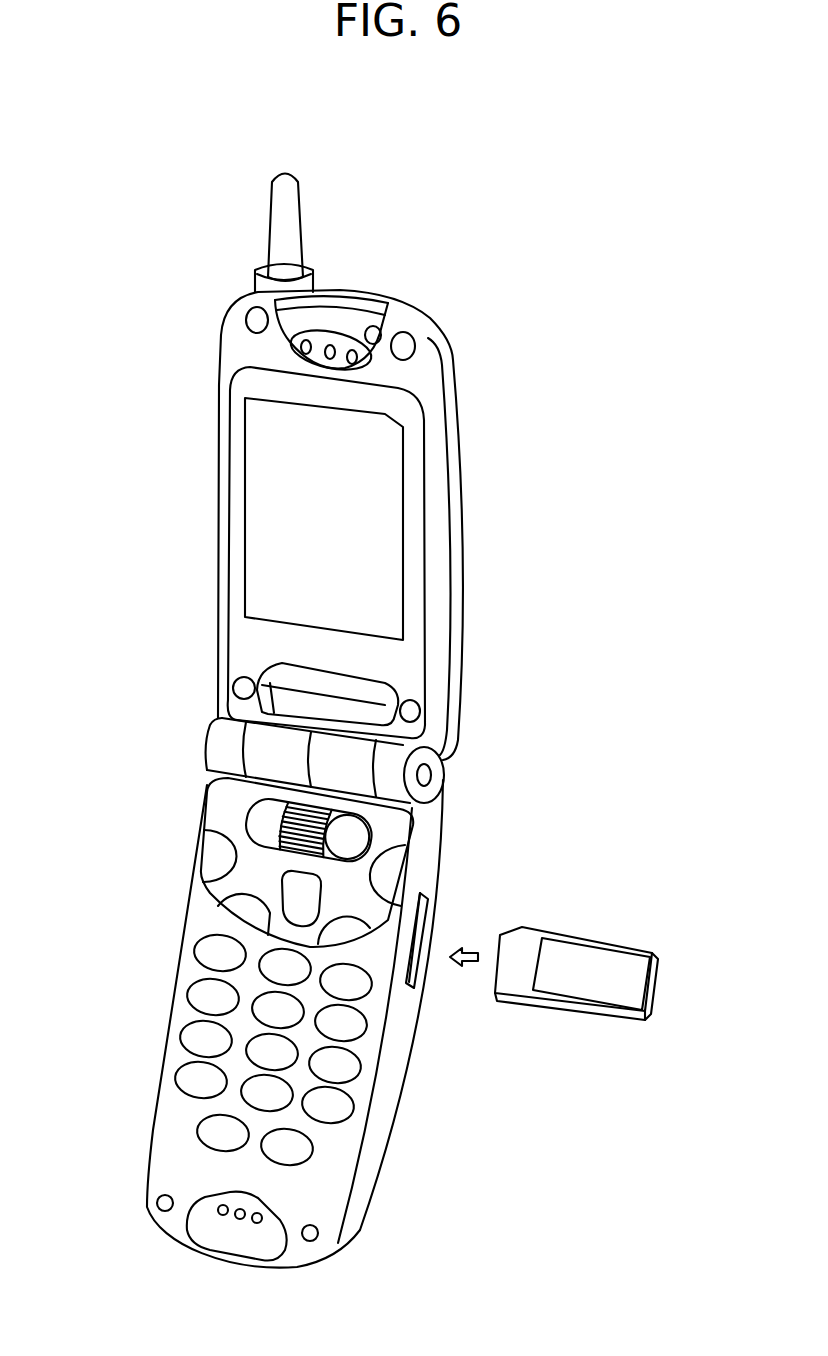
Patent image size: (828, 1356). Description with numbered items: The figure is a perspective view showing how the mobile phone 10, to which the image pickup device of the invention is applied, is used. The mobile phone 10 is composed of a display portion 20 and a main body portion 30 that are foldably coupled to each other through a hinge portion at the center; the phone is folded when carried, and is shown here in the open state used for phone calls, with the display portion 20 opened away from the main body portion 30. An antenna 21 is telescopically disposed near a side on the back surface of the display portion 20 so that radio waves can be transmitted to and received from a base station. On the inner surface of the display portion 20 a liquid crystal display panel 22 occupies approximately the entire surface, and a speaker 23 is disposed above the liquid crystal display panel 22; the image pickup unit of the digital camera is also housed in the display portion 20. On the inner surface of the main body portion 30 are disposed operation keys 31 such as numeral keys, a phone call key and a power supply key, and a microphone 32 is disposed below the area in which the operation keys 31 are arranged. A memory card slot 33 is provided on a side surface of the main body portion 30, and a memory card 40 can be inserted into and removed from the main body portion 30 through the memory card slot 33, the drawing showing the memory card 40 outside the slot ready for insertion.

The mobile phone 10 is at (567, 353).
The display portion 20 is at (448, 507).
The antenna 21 is at (276, 214).
The liquid crystal display panel 22 is at (270, 530).
The speaker 23 is at (320, 340).
The main body portion 30 is at (168, 1098).
The operation keys 31 is at (385, 846).
The microphone 32 is at (237, 1228).
The memory card slot 33 is at (423, 973).
The memory card 40 is at (608, 953).